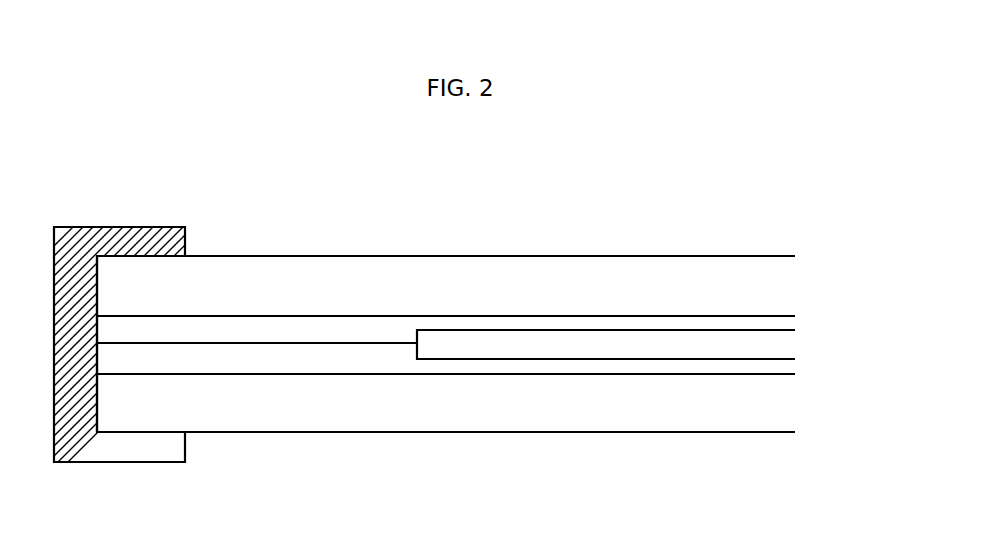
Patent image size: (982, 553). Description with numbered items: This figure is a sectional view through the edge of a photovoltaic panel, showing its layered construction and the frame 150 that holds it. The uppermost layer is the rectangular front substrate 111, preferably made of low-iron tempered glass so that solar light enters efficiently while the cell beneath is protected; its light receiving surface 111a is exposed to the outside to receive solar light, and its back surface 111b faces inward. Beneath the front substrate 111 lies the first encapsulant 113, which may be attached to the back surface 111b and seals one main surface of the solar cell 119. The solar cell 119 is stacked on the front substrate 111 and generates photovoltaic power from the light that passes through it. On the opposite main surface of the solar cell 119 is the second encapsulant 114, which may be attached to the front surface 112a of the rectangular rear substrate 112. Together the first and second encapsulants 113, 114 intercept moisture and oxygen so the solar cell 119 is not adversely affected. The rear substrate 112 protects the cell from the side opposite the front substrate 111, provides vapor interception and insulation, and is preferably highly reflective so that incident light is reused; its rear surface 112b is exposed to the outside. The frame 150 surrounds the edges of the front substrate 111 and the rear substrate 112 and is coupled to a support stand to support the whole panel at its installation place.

The frame 150 is at (125, 240).
The front substrate 111 is at (427, 287).
The light receiving surface 111a is at (333, 257).
The back surface 111b is at (510, 315).
The first encapsulant 113 is at (167, 332).
The solar cell 119 is at (643, 343).
The second encapsulant 114 is at (140, 363).
The rear substrate 112 is at (392, 403).
The front surface 112a is at (257, 375).
The rear surface 112b is at (553, 432).